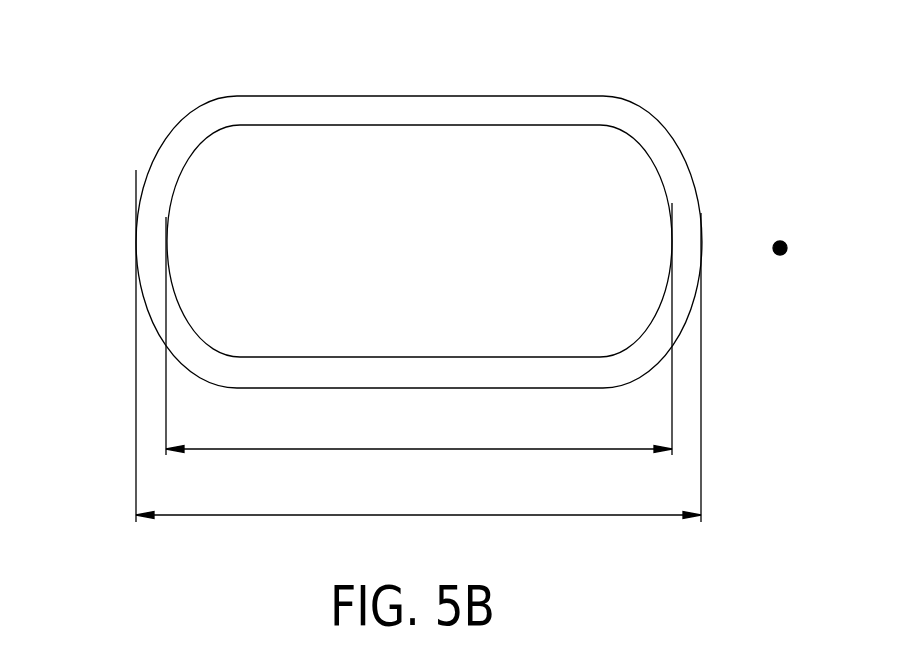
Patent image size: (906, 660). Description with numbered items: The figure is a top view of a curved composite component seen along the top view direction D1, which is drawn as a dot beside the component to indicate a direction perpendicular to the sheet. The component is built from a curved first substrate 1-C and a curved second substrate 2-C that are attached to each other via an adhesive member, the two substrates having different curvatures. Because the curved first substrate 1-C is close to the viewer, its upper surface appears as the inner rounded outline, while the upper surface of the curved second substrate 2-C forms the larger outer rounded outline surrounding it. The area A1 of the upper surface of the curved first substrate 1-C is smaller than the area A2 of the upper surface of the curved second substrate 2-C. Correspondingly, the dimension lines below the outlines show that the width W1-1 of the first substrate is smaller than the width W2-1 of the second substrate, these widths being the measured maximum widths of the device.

The curved second substrate 2-C is at (148, 175).
The curved first substrate 1-C is at (167, 219).
The area of the upper surface of the curved first substrate A1 is at (382, 162).
The area of the upper surface of the curved second substrate A2 is at (503, 115).
The width of the upper surface of the curved first substrate W1-1 is at (419, 329).
The width of the upper surface of the curved second substrate W2-1 is at (418, 346).
The top view direction D1 is at (776, 226).